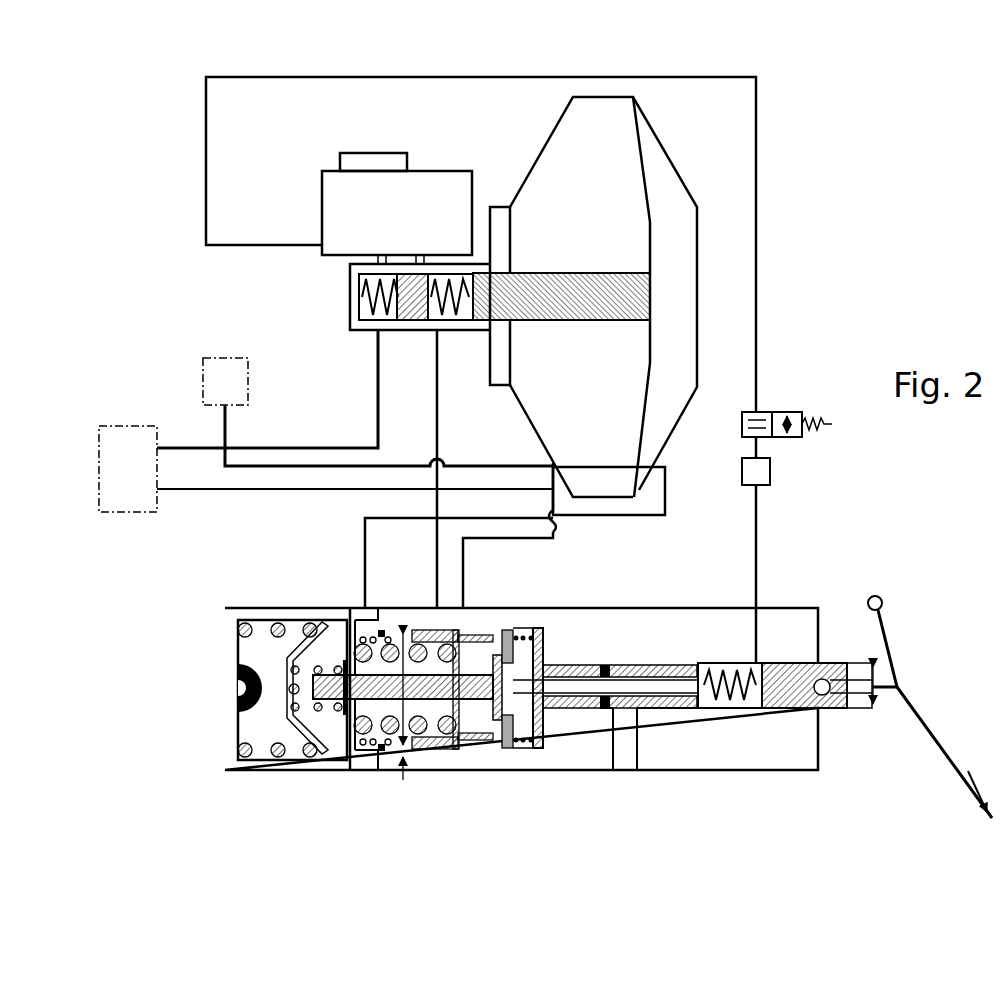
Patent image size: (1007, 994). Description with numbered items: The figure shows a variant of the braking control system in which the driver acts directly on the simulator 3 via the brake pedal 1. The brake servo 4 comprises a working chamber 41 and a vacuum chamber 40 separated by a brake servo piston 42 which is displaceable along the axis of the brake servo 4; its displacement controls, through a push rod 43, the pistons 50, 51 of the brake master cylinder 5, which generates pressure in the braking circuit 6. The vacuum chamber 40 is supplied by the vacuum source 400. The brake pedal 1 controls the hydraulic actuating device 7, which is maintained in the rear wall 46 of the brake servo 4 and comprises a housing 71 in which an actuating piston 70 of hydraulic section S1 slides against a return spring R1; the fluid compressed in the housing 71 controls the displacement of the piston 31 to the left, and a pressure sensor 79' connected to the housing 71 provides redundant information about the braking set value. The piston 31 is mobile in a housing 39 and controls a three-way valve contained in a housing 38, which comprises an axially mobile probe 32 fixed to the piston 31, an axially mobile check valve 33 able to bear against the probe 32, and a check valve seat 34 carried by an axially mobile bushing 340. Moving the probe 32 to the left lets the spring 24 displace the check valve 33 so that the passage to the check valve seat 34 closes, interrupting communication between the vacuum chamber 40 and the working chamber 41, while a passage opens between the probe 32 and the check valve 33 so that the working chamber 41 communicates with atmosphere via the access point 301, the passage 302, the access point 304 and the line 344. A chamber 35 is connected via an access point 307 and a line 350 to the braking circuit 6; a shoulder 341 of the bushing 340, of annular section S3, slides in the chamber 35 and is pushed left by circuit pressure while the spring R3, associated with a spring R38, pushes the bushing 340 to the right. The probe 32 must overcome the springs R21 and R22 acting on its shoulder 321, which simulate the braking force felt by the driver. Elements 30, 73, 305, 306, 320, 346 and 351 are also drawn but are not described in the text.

The brake pedal 1 is at (922, 726).
The simulator 3 is at (752, 778).
The brake servo 4 is at (548, 142).
The brake master cylinder 5 is at (348, 300).
The braking circuit 6 is at (130, 425).
The hydraulic actuating device 7 is at (817, 592).
The spring 24 is at (537, 768).
The housing 30 is at (667, 722).
The piston 31 is at (714, 663).
The probe 32 is at (461, 765).
The check valve 33 is at (514, 765).
The check valve seat 34 is at (492, 768).
The chamber 35 is at (440, 630).
The housing 38 is at (368, 757).
The housing 39 is at (652, 714).
The vacuum chamber 40 is at (572, 384).
The working chamber 41 is at (664, 384).
The brake servo piston 42 is at (634, 118).
The push rod 43 is at (562, 322).
The rear wall 46 is at (662, 138).
The piston 50 is at (499, 272).
The piston 51 is at (412, 322).
The actuating piston 70 is at (812, 660).
The housing 71 is at (748, 672).
The hydraulic line 73 is at (730, 414).
The pressure sensor 79' is at (787, 451).
The access point 301 is at (632, 745).
The passage 302 is at (582, 712).
The access point 304 is at (357, 623).
The piston 305 is at (510, 632).
The port 306 is at (468, 606).
The access point 307 is at (435, 607).
The housing part 320 is at (320, 760).
The shoulder 321 is at (345, 717).
The bushing 340 is at (423, 760).
The shoulder 341 is at (382, 628).
The line 344 is at (364, 540).
The connection 346 is at (556, 530).
The line 350 is at (435, 432).
The line 351 is at (293, 446).
The vacuum source 400 is at (227, 357).
The return spring R1 is at (725, 670).
The spring R3 is at (362, 745).
The simulator spring R21 is at (300, 657).
The simulator spring R22 is at (240, 630).
The spring R38 is at (372, 632).
The hydraulic section S1 is at (889, 696).
The annular section S3 is at (404, 720).